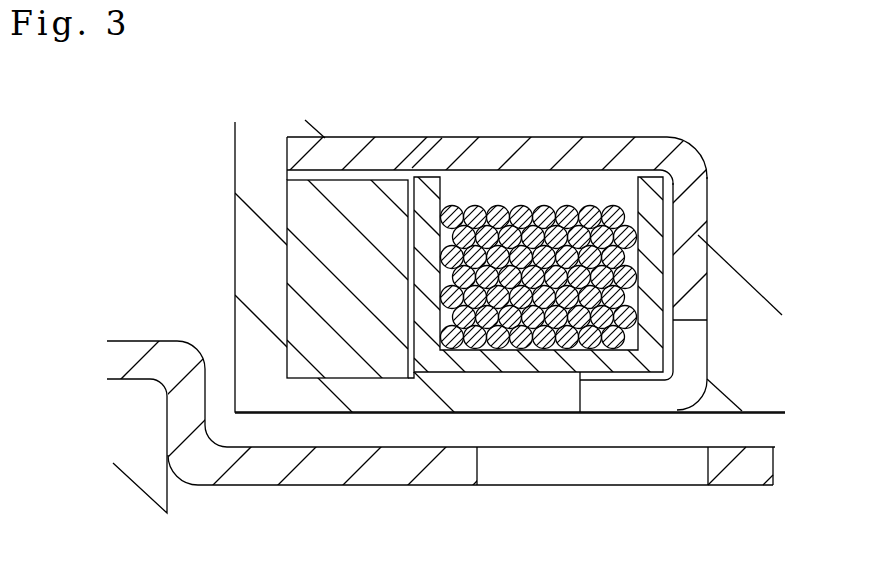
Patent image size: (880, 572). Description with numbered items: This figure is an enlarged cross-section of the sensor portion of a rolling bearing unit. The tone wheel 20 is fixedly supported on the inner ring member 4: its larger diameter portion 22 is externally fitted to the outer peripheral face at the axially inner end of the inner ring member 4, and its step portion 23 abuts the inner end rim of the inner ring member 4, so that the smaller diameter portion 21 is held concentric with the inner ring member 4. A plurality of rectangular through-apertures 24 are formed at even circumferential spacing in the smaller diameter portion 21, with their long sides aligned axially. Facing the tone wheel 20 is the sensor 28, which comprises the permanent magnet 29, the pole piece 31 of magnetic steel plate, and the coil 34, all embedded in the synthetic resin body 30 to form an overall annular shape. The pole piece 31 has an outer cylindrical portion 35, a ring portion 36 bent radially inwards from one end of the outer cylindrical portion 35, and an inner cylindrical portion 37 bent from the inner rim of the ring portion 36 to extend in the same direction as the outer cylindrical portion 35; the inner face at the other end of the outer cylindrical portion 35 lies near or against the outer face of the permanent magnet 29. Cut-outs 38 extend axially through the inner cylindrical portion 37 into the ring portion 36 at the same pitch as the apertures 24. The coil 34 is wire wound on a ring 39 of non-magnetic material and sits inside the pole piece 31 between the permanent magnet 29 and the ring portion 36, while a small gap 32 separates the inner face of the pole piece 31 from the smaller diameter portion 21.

The inner ring member 4 is at (152, 398).
The tone wheel 20 is at (491, 443).
The smaller diameter portion 21 is at (357, 473).
The larger diameter portion 22 is at (130, 353).
The step portion 23 is at (187, 423).
The through-apertures 24 is at (592, 473).
The sensor 28 is at (471, 320).
The permanent magnet 29 is at (338, 253).
The synthetic resin body 30 is at (490, 195).
The pole piece 31 is at (537, 143).
The small gap 32 is at (368, 423).
The coil 34 is at (658, 238).
The outer cylindrical portion 35 is at (437, 142).
The ring portion 36 is at (740, 248).
The inner cylindrical portion 37 is at (642, 397).
The cut-outs 38 is at (662, 392).
The ring 39 is at (655, 285).